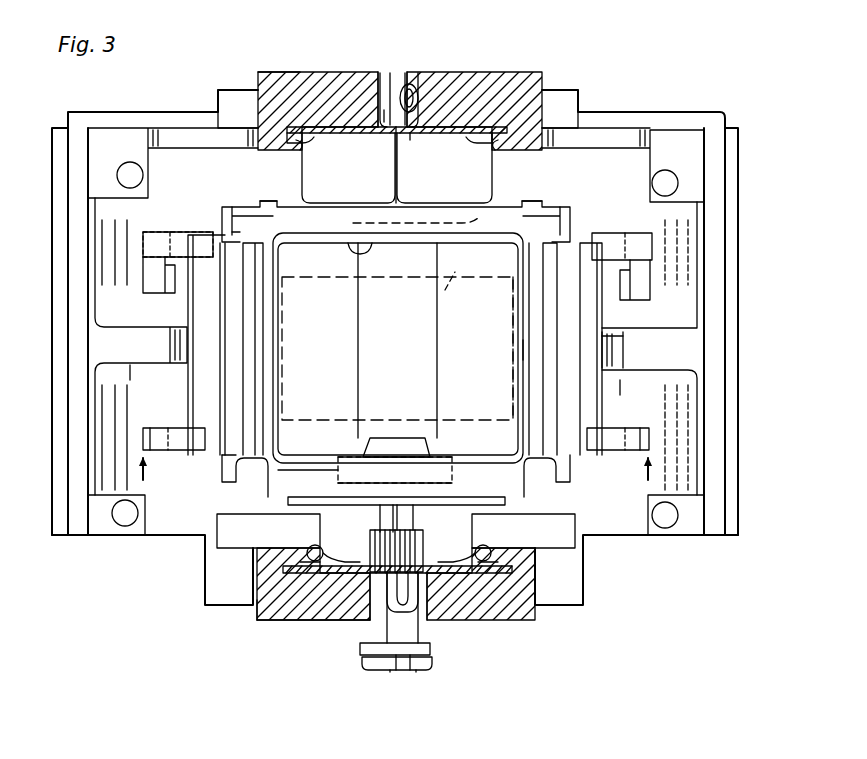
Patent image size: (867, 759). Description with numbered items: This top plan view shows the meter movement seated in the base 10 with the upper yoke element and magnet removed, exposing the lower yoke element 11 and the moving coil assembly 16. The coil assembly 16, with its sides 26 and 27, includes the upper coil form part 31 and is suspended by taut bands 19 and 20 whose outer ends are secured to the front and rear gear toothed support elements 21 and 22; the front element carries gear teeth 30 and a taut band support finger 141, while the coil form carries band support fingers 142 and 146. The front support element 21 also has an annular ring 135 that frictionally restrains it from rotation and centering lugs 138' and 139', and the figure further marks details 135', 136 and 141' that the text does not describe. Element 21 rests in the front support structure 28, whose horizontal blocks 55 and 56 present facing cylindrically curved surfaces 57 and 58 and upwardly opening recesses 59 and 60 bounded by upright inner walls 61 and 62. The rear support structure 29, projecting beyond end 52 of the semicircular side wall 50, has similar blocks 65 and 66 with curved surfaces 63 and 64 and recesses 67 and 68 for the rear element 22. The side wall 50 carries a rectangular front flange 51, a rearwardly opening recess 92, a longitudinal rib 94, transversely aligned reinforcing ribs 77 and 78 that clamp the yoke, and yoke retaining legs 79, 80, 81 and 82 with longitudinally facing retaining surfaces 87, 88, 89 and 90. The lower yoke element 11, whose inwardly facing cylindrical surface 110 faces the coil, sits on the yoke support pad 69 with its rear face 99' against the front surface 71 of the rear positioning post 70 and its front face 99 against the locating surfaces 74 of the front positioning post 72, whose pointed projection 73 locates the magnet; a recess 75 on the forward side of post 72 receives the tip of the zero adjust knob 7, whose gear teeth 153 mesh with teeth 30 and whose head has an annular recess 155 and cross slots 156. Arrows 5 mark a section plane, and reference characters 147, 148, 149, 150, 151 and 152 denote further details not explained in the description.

The section line 5- 5 is at (394, 476).
The zero adjust knob 7 is at (424, 672).
The base 10 is at (48, 312).
The lower yoke element 11 is at (180, 327).
The moving coil assembly 16 is at (530, 348).
The taut band 19 is at (380, 520).
The taut band 20 is at (348, 168).
The front support element 21 is at (326, 606).
The rear support element 22 is at (444, 168).
The side of coil assembly 26 is at (532, 318).
The side of coil assembly 27 is at (266, 318).
The front support structure 28 is at (254, 634).
The rear support structure 29 is at (304, 68).
The gear teeth 30 is at (258, 620).
The upper coil form part 31 is at (552, 212).
The side wall 50 is at (740, 352).
The front flange 51 is at (690, 537).
The end of side wall 52 is at (727, 113).
The horizontal block 55 is at (290, 625).
The horizontal block 56 is at (535, 620).
The cylindrically curved surface 57 is at (395, 637).
The cylindrically curved surface 58 is at (362, 620).
The arcuately curved recess 59 is at (330, 565).
The arcuately curved recess 60 is at (484, 568).
The upright inner wall 61 is at (284, 553).
The upright inner wall 62 is at (483, 552).
The cylindrically curved surface 63 is at (387, 92).
The cylindrically curved surface 64 is at (440, 72).
The block 65 is at (318, 70).
The block 66 is at (500, 72).
The recess 67 is at (276, 90).
The recess 68 is at (556, 90).
The yoke support pad 69 is at (450, 286).
The rear positioning post 70 is at (470, 221).
The front surface 71 is at (350, 248).
The front positioning post 72 is at (443, 452).
The positioning projection 73 is at (386, 438).
The locating surfaces 74 is at (352, 430).
The recess 75 is at (368, 640).
The reinforcing rib 77 is at (160, 363).
The reinforcing rib 78 is at (665, 362).
The yoke retaining leg 79 is at (172, 452).
The yoke retaining leg 80 is at (604, 456).
The rear yoke positioning and retaining leg 81 is at (192, 232).
The rear yoke positioning and retaining leg 82 is at (632, 233).
The yoke retaining surface 87 is at (195, 428).
The yoke retaining surface 88 is at (606, 428).
The yoke retaining surface 89 is at (188, 292).
The yoke retaining surface 90 is at (606, 286).
The rectangular recess 92 is at (492, 190).
The longitudinal rib 94 is at (730, 272).
The front face 99 is at (210, 471).
The rear face 99' is at (398, 348).
The cylindrical surface 110 is at (242, 388).
The annular ring 135 is at (397, 555).
The contact ring 135' is at (257, 155).
The contact ring 136 is at (462, 590).
The centering lug 138' is at (397, 146).
The centering lug 139' is at (436, 150).
The taut band support finger 141 is at (442, 617).
The hook cup 141' is at (417, 71).
The taut band support finger 142 is at (414, 518).
The taut band support finger 146 is at (397, 206).
The spacer strip 147 is at (545, 388).
The yoke nub 148 is at (242, 208).
The lower bracket 149 is at (234, 484).
The upper bracket 150 is at (234, 238).
The yoke nub 151 is at (558, 236).
The lower bracket 152 is at (560, 484).
The gear teeth 153 is at (424, 546).
The annular recess 155 is at (434, 660).
The cross slots 156 is at (404, 670).